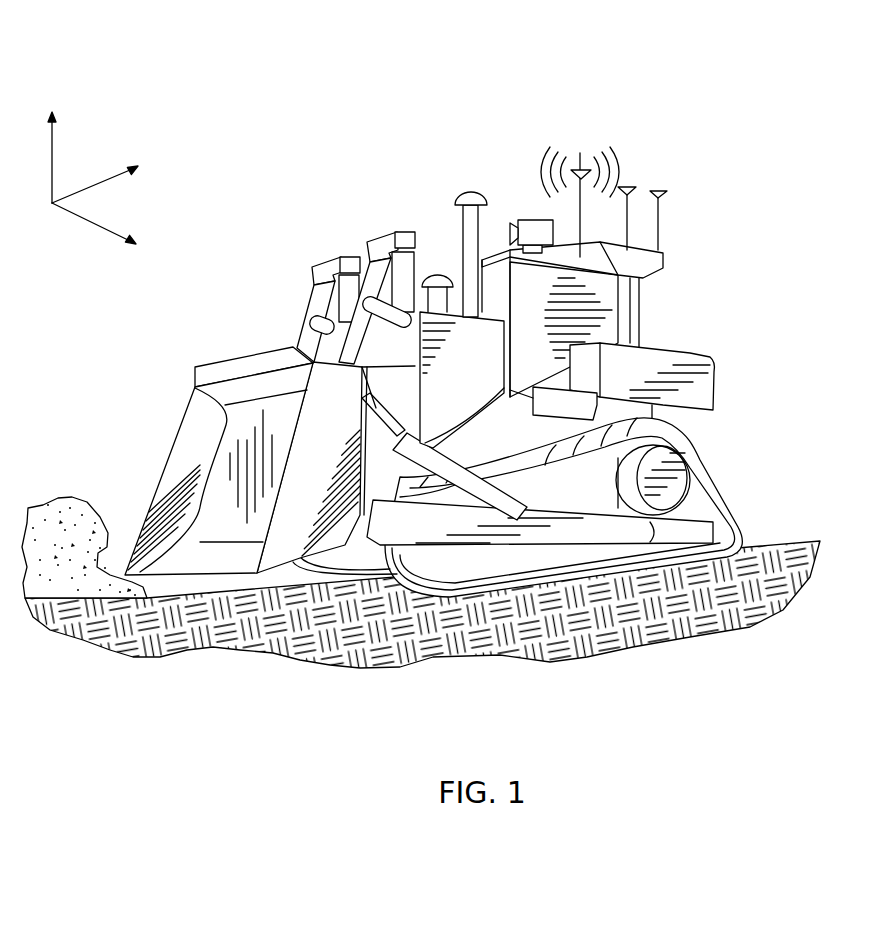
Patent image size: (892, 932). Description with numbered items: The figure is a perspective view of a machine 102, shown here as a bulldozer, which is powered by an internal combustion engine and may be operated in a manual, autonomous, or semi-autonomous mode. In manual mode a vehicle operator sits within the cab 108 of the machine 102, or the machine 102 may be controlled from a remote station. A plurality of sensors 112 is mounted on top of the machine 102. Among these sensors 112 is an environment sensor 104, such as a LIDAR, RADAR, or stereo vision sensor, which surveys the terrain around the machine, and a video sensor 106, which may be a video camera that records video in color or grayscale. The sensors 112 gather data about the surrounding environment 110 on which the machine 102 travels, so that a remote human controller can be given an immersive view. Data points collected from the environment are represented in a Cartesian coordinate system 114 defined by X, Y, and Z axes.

The machine 102 is at (373, 179).
The environment sensor 104 is at (603, 155).
The video sensor 106 is at (530, 217).
The cab 108 is at (590, 298).
The surrounding environment 110 is at (478, 665).
The plurality of sensors 112 is at (538, 118).
The Cartesian coordinate system 114 is at (132, 89).